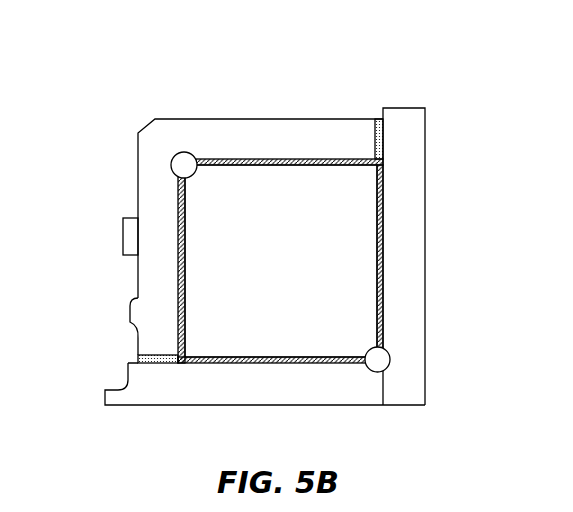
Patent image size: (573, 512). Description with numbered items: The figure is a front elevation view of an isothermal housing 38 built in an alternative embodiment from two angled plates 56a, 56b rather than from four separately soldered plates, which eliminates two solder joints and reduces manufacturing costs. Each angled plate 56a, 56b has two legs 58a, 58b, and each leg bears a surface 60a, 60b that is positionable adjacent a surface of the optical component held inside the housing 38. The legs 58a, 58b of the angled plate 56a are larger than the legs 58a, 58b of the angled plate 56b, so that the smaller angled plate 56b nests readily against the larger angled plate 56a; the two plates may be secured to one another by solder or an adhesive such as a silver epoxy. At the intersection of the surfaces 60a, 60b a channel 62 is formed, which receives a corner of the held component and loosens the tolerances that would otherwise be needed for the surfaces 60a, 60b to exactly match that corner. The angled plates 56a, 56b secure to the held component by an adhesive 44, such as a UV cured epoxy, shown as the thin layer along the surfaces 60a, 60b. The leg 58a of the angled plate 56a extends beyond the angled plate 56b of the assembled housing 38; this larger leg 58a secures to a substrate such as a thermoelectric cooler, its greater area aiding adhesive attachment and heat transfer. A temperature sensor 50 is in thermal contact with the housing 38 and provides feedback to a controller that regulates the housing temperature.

The isothermal housing 38 is at (455, 128).
The adhesive 44 is at (322, 158).
The temperature sensor 50 is at (130, 237).
The angled plate 56a is at (402, 390).
The angled plate 56b is at (155, 133).
The leg 58a is at (155, 295).
The leg 58b is at (235, 130).
The surface 60a is at (178, 210).
The surface 60b is at (278, 158).
The channel 62 is at (180, 154).